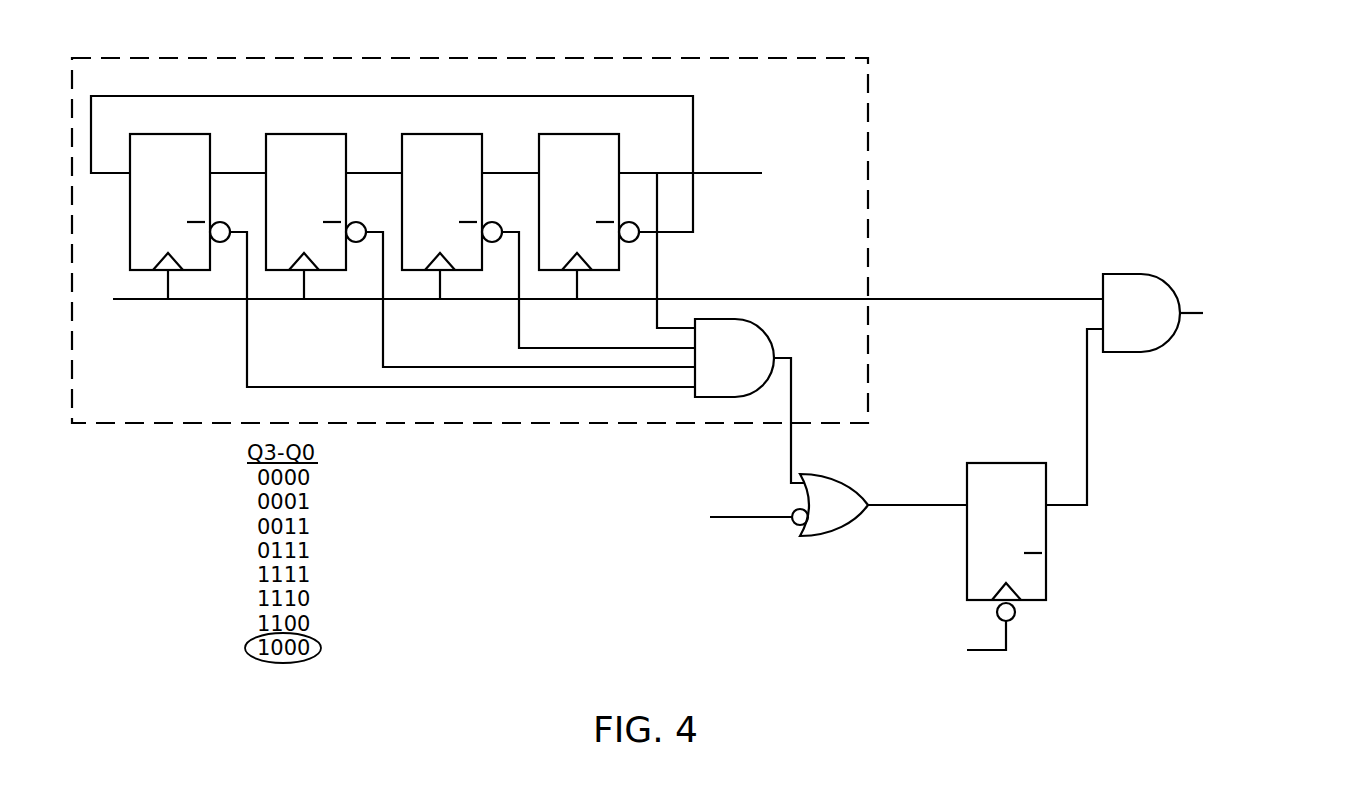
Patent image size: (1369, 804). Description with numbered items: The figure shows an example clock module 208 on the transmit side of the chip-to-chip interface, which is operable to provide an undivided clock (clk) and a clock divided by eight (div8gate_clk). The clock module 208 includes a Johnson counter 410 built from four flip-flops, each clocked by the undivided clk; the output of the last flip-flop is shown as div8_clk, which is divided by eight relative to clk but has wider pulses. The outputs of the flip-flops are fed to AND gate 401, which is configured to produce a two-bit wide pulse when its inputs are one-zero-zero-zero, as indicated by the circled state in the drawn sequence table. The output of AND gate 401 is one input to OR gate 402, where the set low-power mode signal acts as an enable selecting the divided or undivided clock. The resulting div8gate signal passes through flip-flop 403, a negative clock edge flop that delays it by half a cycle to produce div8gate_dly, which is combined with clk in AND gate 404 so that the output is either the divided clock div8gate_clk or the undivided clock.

The clock module 208 is at (640, 36).
The Johnson counter 410 is at (832, 99).
The AND gate 401 is at (755, 369).
The OR gate 402 is at (828, 537).
The flip-flop 403 is at (967, 540).
The AND gate 404 is at (1169, 324).